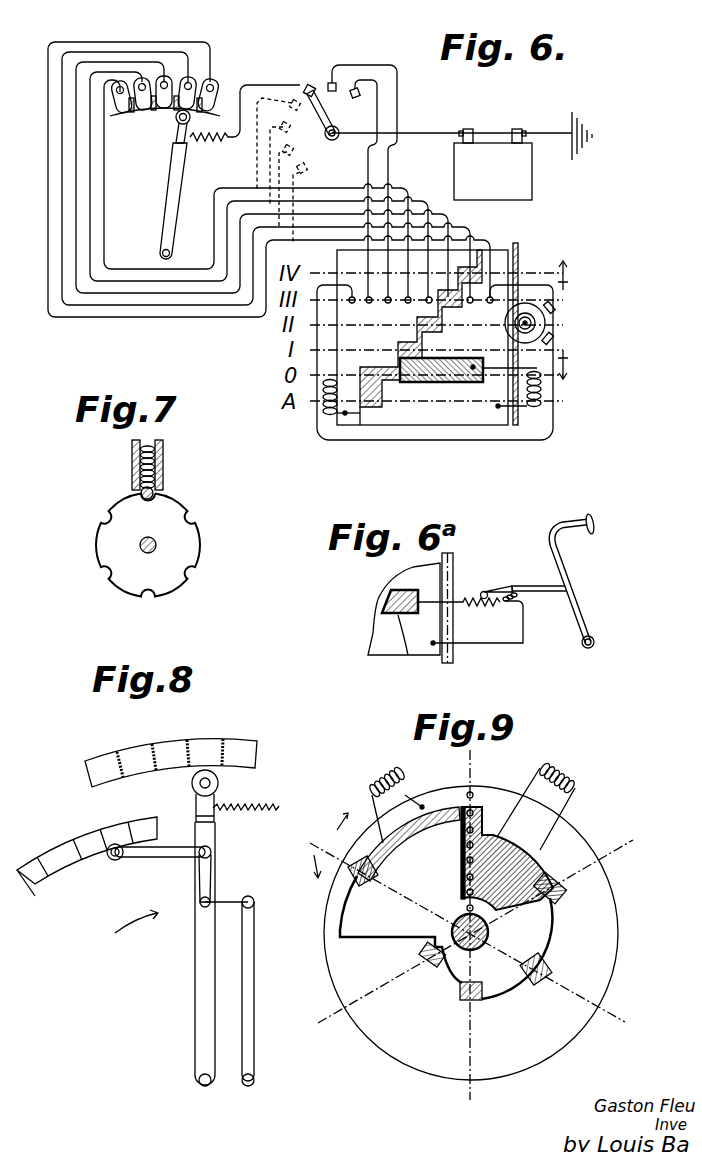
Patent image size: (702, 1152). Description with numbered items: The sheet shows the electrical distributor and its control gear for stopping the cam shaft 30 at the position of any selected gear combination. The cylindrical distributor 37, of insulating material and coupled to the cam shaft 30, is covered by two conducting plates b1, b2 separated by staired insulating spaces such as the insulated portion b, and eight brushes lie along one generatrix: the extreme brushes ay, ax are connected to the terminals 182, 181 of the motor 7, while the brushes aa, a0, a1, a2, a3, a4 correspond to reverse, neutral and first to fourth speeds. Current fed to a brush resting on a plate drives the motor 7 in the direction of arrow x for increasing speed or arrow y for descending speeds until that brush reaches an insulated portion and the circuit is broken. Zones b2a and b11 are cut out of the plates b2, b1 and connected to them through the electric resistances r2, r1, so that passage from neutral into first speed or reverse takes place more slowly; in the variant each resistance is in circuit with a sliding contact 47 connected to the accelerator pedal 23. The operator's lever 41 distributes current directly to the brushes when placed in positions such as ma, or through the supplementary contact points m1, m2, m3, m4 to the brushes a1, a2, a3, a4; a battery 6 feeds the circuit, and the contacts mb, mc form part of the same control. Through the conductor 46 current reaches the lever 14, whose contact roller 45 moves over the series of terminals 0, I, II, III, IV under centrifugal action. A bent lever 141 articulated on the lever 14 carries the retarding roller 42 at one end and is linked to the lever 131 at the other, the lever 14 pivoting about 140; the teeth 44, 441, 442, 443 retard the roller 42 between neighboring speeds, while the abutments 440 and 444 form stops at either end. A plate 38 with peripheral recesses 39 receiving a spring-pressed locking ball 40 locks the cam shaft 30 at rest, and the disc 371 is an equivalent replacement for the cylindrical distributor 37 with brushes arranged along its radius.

In FIG. 6, the battery 6 is at (513, 172).
In FIG. 6, the motor 7 is at (548, 320).
In FIG. 6, the lever 14 is at (173, 193).
In FIG. 8, the lever 14 is at (201, 968).
In FIG. 6, the lever 41 is at (336, 122).
In FIG. 6, the contact roller 45 is at (176, 120).
In FIG. 8, the contact roller 45 is at (220, 783).
In FIG. 6, the conductor 46 is at (245, 113).
In FIG. 8, the conductor 46 is at (246, 824).
In FIG. 6, the terminal 181 is at (554, 306).
In FIG. 6, the terminal 182 is at (554, 340).
In FIG. 6, the cylindrical distributor 37 is at (545, 327).
In FIG. 6A, the cylindrical distributor 37 is at (423, 578).
In FIG. 7, the cam shaft 30 is at (156, 538).
In FIG. 9, the cam shaft 30 is at (480, 953).
In FIG. 7, the plate 38 is at (123, 512).
In FIG. 7, the recesses 39 is at (190, 568).
In FIG. 7, the locking ball 40 is at (140, 472).
In FIG. 6A, the sliding contact or roller 47 is at (486, 590).
In FIG. 6A, the accelerator pedal 23 is at (560, 563).
In FIG. 8, the retarding roller 42 is at (122, 858).
In FIG. 8, the teeth or extensions 44 is at (60, 868).
In FIG. 8, the abutment 440 is at (33, 893).
In FIG. 8, the tooth 441 is at (82, 862).
In FIG. 8, the tooth 442 is at (80, 842).
In FIG. 8, the tooth 443 is at (130, 828).
In FIG. 8, the tooth 444 is at (158, 836).
In FIG. 8, the lever pivot 140 is at (198, 1078).
In FIG. 8, the bent lever 141 is at (168, 857).
In FIG. 8, the lever 131 is at (252, 1013).
In FIG. 9, the disc 371 is at (575, 1027).
In FIG. 6, the contact point m1 is at (291, 100).
In FIG. 6, the contact point m2 is at (281, 129).
In FIG. 6, the contact point m3 is at (284, 152).
In FIG. 6, the contact point m4 is at (306, 168).
In FIG. 6, the position ma is at (358, 88).
In FIG. 6, the contact mb is at (311, 84).
In FIG. 6, the contact mc is at (333, 80).
In FIG. 6, the brush ay is at (346, 313).
In FIG. 9, the brush ay is at (473, 793).
In FIG. 6, the brush a0 is at (377, 316).
In FIG. 9, the brush a0 is at (466, 830).
In FIG. 6, the brush a1 is at (399, 313).
In FIG. 9, the brush a1 is at (466, 845).
In FIG. 6, the brush a2 is at (417, 289).
In FIG. 9, the brush a2 is at (466, 860).
In FIG. 6, the brush a3 is at (444, 313).
In FIG. 9, the brush a3 is at (466, 877).
In FIG. 6, the brush a4 is at (490, 337).
In FIG. 9, the brush a4 is at (466, 892).
In FIG. 6, the brush ax is at (487, 313).
In FIG. 9, the brush ax is at (453, 908).
In FIG. 6, the brush aa is at (380, 336).
In FIG. 9, the brush aa is at (482, 813).
In FIG. 6, the insulated portion b is at (375, 408).
In FIG. 6, the conducting plate b1 is at (438, 408).
In FIG. 6A, the conducting plate b1 is at (387, 640).
In FIG. 9, the conducting plate b1 is at (530, 930).
In FIG. 6, the zone b11 is at (465, 382).
In FIG. 6A, the zone b11 is at (428, 648).
In FIG. 9, the zone b11 is at (533, 857).
In FIG. 6, the conducting plate b2 is at (345, 357).
In FIG. 9, the conducting plate b2 is at (410, 1030).
In FIG. 6, the zone b2a is at (360, 385).
In FIG. 9, the zone b2a is at (360, 862).
In FIG. 6, the electric resistance r1 is at (542, 390).
In FIG. 6A, the electric resistance r1 is at (470, 619).
In FIG. 9, the electric resistance r1 is at (542, 795).
In FIG. 6, the electric resistance r2 is at (322, 412).
In FIG. 9, the electric resistance r2 is at (396, 790).
In FIG. 6, the arrow X x is at (576, 367).
In FIG. 9, the arrow X x is at (308, 863).
In FIG. 6, the arrow Y y is at (573, 275).
In FIG. 9, the arrow Y y is at (332, 823).
In FIG. 6, the terminal 0 is at (120, 79).
In FIG. 8, the terminal 0 is at (100, 770).
In FIG. 6, the terminal I is at (142, 76).
In FIG. 8, the terminal I is at (134, 755).
In FIG. 6, the terminal II is at (164, 74).
In FIG. 8, the terminal II is at (168, 750).
In FIG. 6, the terminal III is at (188, 75).
In FIG. 8, the terminal III is at (204, 750).
In FIG. 6, the terminal IV is at (212, 78).
In FIG. 8, the terminal IV is at (242, 752).